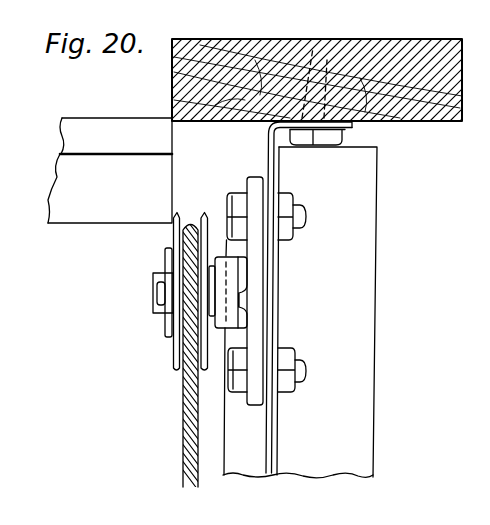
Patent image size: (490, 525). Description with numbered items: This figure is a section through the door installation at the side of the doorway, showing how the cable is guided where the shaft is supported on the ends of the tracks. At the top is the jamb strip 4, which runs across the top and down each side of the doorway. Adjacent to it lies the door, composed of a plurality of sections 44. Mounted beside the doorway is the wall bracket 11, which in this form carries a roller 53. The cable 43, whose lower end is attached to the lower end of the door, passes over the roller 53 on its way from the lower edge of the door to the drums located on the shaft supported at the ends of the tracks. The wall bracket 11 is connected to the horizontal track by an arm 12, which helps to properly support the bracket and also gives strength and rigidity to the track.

The jamb strip 4 is at (390, 42).
The door section 44 is at (67, 208).
The roller 53 is at (171, 235).
The cable 43 is at (182, 437).
The wall bracket 11 is at (268, 152).
The arm 12 is at (277, 462).